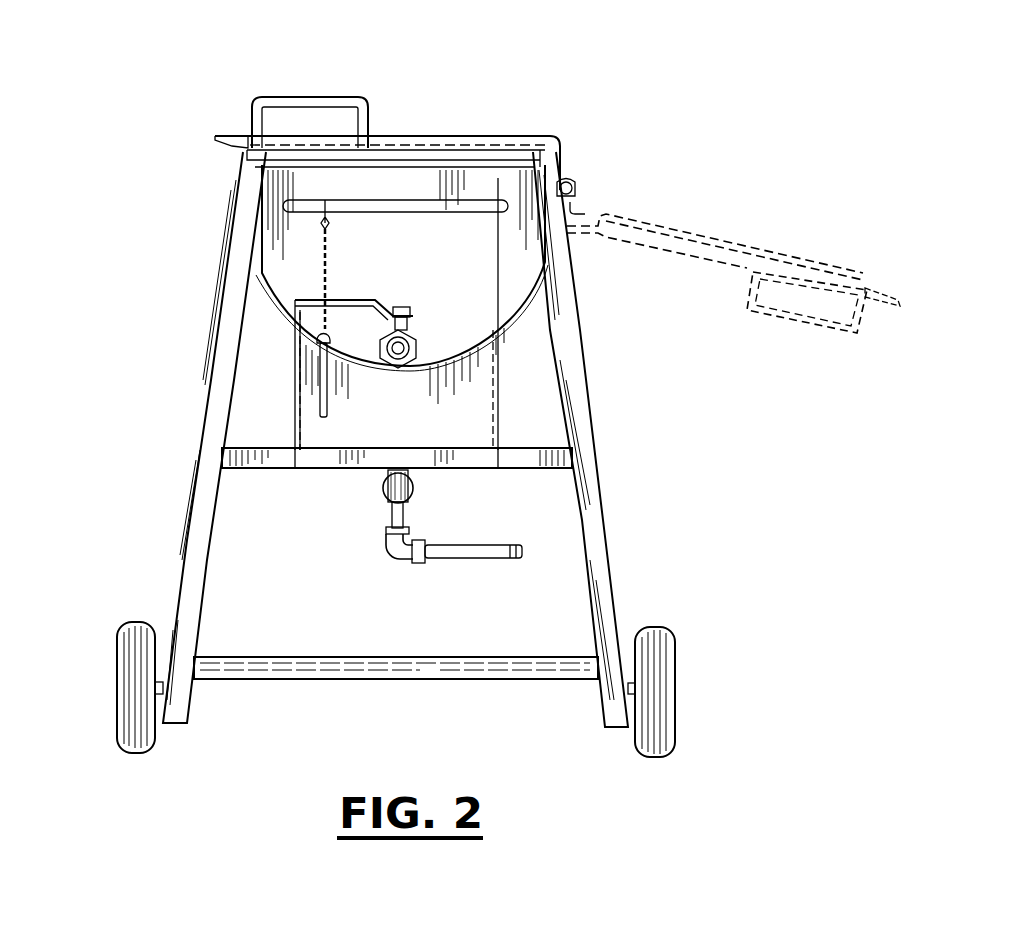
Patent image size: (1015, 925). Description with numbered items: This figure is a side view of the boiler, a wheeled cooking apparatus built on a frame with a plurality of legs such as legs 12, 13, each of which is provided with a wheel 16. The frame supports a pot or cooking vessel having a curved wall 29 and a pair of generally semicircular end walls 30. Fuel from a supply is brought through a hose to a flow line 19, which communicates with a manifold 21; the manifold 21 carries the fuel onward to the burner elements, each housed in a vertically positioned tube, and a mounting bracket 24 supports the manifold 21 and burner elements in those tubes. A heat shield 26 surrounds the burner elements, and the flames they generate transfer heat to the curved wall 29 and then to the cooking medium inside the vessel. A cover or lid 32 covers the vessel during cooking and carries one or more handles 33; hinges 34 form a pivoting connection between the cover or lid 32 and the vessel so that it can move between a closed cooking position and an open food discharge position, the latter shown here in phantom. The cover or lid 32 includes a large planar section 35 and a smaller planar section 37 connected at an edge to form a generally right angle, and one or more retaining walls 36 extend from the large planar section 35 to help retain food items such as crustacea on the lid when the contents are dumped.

The leg 12 is at (187, 578).
The leg 13 is at (603, 575).
The wheel 16 is at (127, 622).
The flow line 19 is at (477, 560).
The manifold 21 is at (378, 488).
The mounting bracket 24 is at (413, 473).
The heat shield 26 is at (293, 402).
The curved wall 29 is at (523, 333).
The semi circular end wall 30 is at (392, 265).
The cover or lid 32 is at (227, 133).
The handle 33 is at (320, 98).
The hinge 34 is at (577, 187).
The large planar section 35 is at (593, 247).
The retaining wall 36 is at (647, 222).
The smaller planar section 37 is at (580, 207).